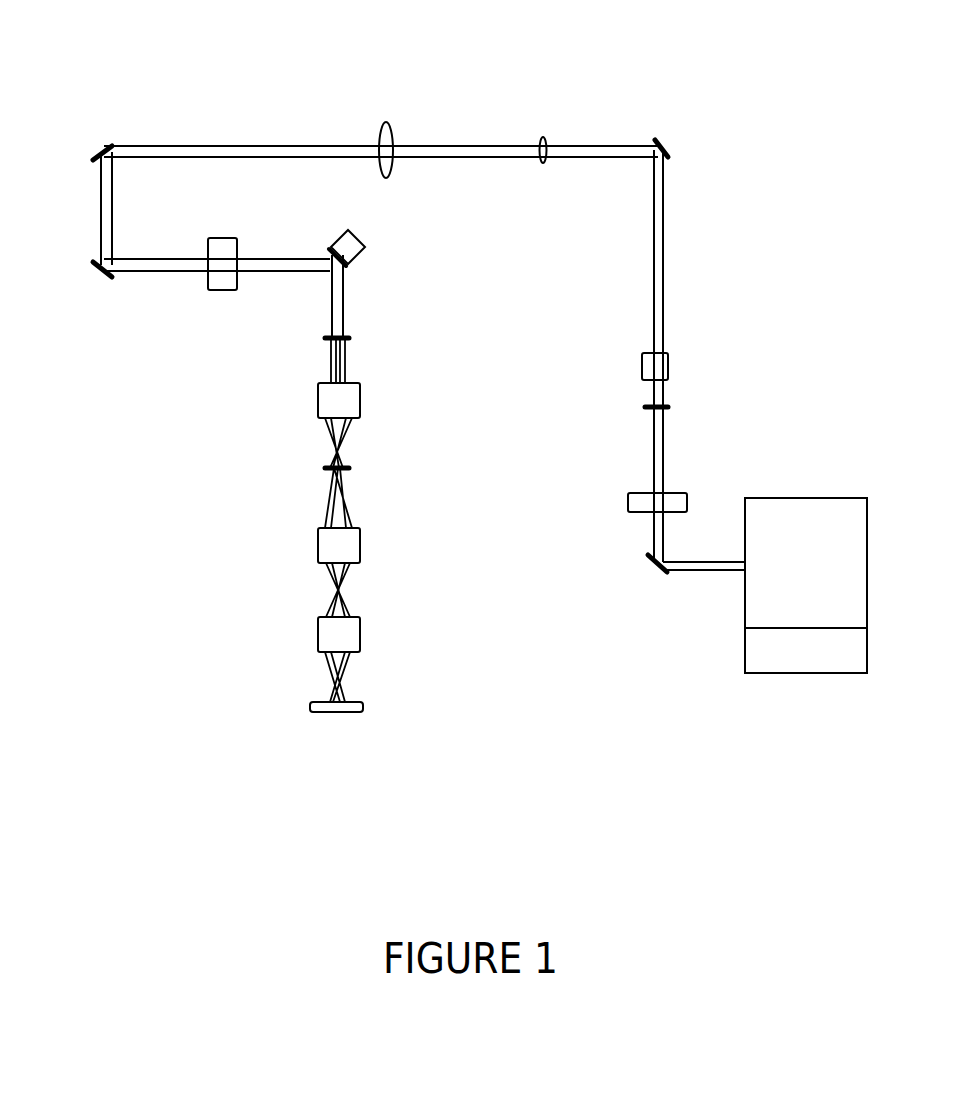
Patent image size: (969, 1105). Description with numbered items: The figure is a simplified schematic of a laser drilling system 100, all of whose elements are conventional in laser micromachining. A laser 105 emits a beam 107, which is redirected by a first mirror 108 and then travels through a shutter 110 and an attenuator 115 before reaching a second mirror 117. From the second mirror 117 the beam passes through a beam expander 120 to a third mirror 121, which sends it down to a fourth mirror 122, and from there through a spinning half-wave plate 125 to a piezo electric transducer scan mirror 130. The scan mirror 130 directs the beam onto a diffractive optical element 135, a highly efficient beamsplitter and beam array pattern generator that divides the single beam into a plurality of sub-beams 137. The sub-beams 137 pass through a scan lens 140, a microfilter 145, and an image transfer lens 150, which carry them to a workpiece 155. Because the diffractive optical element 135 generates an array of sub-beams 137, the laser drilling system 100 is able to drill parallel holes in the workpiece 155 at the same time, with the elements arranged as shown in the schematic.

The laser drilling system 100 is at (150, 68).
The laser 105 is at (785, 673).
The beam 107 is at (708, 572).
The first mirror 108 is at (650, 557).
The shutter 110 is at (687, 496).
The attenuator 115 is at (669, 405).
The second mirror 117 is at (672, 147).
The beam expander 120 is at (542, 137).
The third mirror 121 is at (105, 142).
The fourth mirror 122 is at (112, 258).
The spinning half-wave plate 125 is at (243, 325).
The piezo electric transducer (PZT) scan mirror 130 is at (417, 217).
The diffractive optical element (DOE) 135 is at (351, 337).
The sub-beams 137 is at (346, 371).
The scan lens 140 is at (320, 403).
The microfilter 145 is at (348, 468).
The image transfer lens 150 is at (360, 637).
The workpiece 155 is at (415, 678).